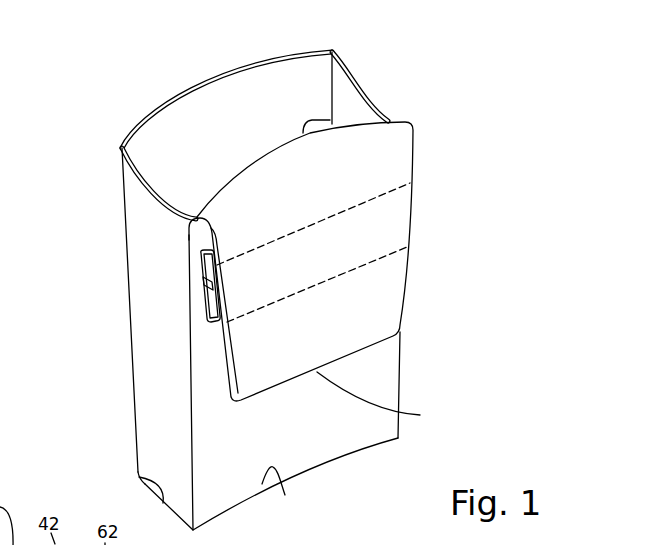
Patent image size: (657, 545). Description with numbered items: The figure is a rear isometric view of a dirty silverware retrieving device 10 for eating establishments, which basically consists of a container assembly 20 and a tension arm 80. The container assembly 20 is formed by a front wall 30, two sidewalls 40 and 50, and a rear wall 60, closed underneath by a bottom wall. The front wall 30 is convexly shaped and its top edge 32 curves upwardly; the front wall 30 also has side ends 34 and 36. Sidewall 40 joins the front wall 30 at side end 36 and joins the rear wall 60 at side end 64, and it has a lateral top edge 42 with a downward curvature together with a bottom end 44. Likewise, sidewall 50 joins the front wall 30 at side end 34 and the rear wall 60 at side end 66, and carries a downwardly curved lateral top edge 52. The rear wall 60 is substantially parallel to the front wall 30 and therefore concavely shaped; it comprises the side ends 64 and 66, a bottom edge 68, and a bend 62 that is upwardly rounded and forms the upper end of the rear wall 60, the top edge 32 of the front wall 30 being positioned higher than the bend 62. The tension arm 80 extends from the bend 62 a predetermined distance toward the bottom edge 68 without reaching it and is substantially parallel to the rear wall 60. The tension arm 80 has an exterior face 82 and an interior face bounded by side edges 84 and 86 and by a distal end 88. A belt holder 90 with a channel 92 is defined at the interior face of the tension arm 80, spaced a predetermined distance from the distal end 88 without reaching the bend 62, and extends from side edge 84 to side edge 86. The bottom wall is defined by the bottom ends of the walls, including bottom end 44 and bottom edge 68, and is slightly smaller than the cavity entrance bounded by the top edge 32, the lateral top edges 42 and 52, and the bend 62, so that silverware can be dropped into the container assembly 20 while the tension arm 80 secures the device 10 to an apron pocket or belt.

The dirty silverware retrieving device 10 is at (518, 113).
The container assembly 20 is at (113, 342).
The front wall 30 is at (195, 128).
The top edge 32 is at (223, 72).
The side end 34 is at (334, 52).
The side end 36 is at (118, 175).
The sidewall 40 is at (158, 428).
The lateral top edge 42 is at (150, 187).
The bottom end 44 is at (138, 474).
The sidewall 50 is at (342, 95).
The lateral top edge 52 is at (369, 99).
The rear wall 60 is at (383, 377).
The bend 62 is at (330, 120).
The side end 64 is at (195, 482).
The side end 66 is at (401, 340).
The bottom edge 68 is at (285, 495).
The tension arm 80 is at (421, 261).
The exterior face 82 is at (337, 313).
The side edge 84 is at (228, 374).
The side edge 86 is at (412, 213).
The distal end 88 is at (420, 415).
The belt holder 90 is at (199, 266).
The channel 92 is at (210, 291).